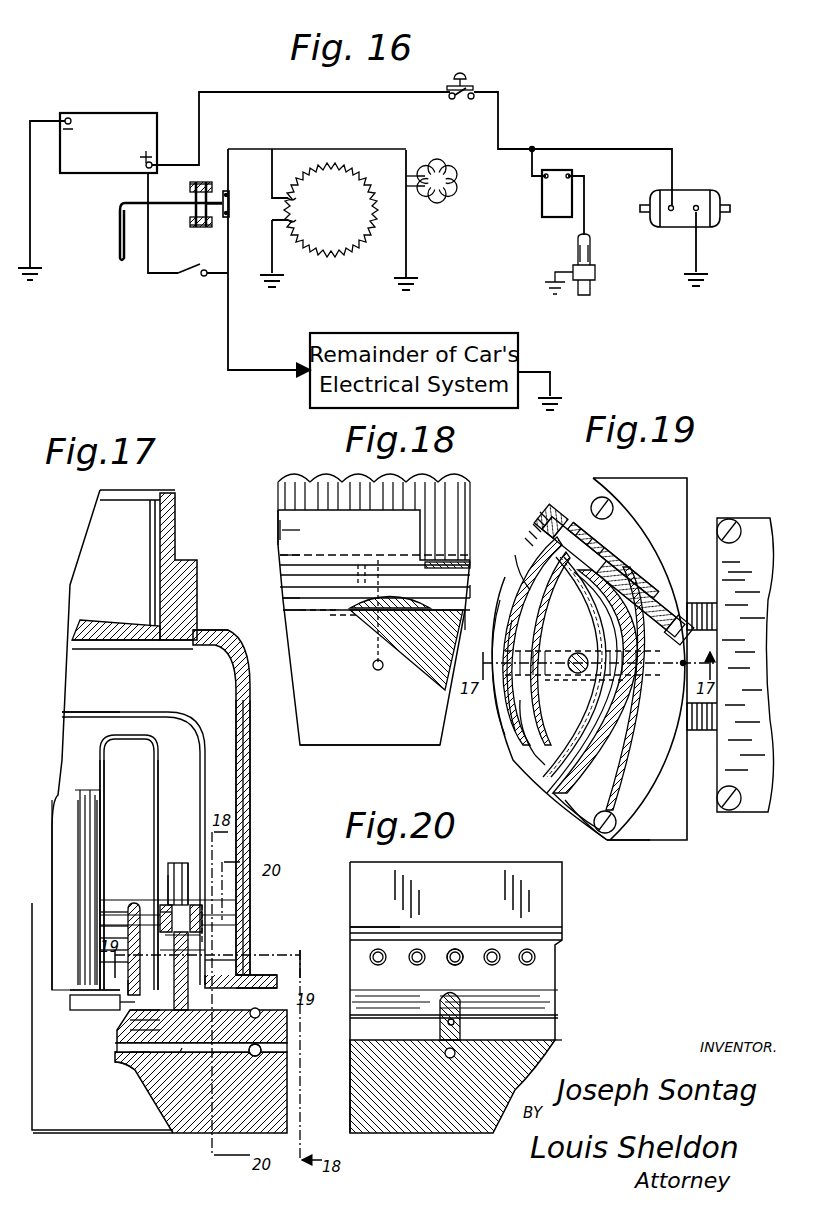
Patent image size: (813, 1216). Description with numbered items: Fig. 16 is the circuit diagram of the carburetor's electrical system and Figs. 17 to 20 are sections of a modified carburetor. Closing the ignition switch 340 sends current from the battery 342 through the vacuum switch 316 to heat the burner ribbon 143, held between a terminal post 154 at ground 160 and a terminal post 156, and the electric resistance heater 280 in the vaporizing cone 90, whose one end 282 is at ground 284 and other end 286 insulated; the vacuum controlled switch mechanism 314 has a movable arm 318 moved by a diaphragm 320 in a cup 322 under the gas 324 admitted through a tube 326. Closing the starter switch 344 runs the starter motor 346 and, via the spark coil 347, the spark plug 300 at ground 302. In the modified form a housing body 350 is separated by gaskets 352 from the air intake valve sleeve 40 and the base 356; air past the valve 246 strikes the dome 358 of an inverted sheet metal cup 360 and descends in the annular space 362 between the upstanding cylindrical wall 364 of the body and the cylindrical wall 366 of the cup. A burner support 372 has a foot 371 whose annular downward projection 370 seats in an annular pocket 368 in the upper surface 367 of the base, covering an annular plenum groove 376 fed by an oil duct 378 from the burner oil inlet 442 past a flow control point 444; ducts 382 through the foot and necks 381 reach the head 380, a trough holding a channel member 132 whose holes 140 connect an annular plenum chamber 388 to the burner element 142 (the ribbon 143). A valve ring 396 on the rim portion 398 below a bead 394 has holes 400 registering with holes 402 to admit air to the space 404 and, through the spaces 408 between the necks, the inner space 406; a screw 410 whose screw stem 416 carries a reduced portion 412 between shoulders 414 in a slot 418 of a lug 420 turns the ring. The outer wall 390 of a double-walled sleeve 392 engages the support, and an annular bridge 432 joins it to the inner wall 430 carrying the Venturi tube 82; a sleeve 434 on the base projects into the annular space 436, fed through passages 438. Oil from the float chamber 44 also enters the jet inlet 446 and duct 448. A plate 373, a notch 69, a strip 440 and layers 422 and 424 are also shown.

In FIG. 16, the battery 342 is at (125, 118).
In FIG. 16, the starter switch 344 is at (463, 98).
In FIG. 16, the vacuum controlled switch mechanism 314 is at (200, 228).
In FIG. 16, the gas 324 is at (191, 186).
In FIG. 16, the cup 322 is at (191, 222).
In FIG. 16, the diaphragm 320 is at (210, 200).
In FIG. 16, the vacuum switch 316 is at (232, 196).
In FIG. 16, the movable arm 318 is at (232, 206).
In FIG. 16, the tube 326 is at (120, 238).
In FIG. 16, the ignition switch 340 is at (193, 282).
In FIG. 16, the burner ribbon 143 is at (327, 258).
In FIG. 17, the burner ribbon 143 is at (190, 870).
In FIG. 18, the burner ribbon 143 is at (462, 492).
In FIG. 16, the terminal post 156 is at (308, 195).
In FIG. 16, the terminal post 154 is at (296, 222).
In FIG. 16, the ground 160 is at (278, 280).
In FIG. 16, the electric resistance heater 280 is at (462, 182).
In FIG. 16, the other end 286 is at (412, 175).
In FIG. 16, the one end 282 is at (412, 188).
In FIG. 16, the ground 284 is at (416, 284).
In FIG. 16, the ground 302 is at (384, 148).
In FIG. 16, the spark coil 347 is at (548, 220).
In FIG. 16, the spark plug 300 is at (592, 253).
In FIG. 16, the starter motor 346 is at (690, 190).
In FIG. 17, the air intake valve sleeve 40 is at (197, 592).
In FIG. 17, the valve 246 is at (104, 620).
In FIG. 17, the housing body 350 is at (252, 812).
In FIG. 19, the housing body 350 is at (618, 506).
In FIG. 17, the gaskets 352 is at (238, 637).
In FIG. 17, the annular space 362 is at (235, 772).
In FIG. 19, the annular space 362 is at (548, 766).
In FIG. 17, the upstanding cylindrical wall 364 is at (246, 780).
In FIG. 19, the upstanding cylindrical wall 364 is at (614, 760).
In FIG. 17, the cylindrical wall 366 is at (251, 792).
In FIG. 19, the cylindrical wall 366 is at (560, 790).
In FIG. 20, the cylindrical wall 366 is at (550, 898).
In FIG. 17, the inverted sheet metal cup 360 is at (145, 694).
In FIG. 17, the dome 358 is at (95, 700).
In FIG. 17, the annular bridge 432 is at (128, 738).
In FIG. 17, the inner wall 430 is at (104, 800).
In FIG. 17, the double-walled sleeve 392 is at (98, 768).
In FIG. 17, the Venturi tube 82 is at (60, 860).
In FIG. 17, the annular space 436 is at (125, 853).
In FIG. 17, the outer wall 390 is at (158, 850).
In FIG. 19, the outer wall 390 is at (536, 758).
In FIG. 17, the burner element 142 is at (184, 860).
In FIG. 18, the burner element 142 is at (305, 470).
In FIG. 17, the channel member 132 is at (166, 880).
In FIG. 18, the channel member 132 is at (280, 508).
In FIG. 17, the annular plenum chamber 388 is at (262, 906).
In FIG. 18, the annular plenum chamber 388 is at (470, 566).
In FIG. 19, the annular plenum chamber 388 is at (508, 566).
In FIG. 17, the inner space 406 is at (162, 908).
In FIG. 17, the holes 140 is at (158, 910).
In FIG. 17, the space 404 is at (205, 900).
In FIG. 17, the bead 394 is at (205, 915).
In FIG. 19, the bead 394 is at (522, 738).
In FIG. 20, the bead 394 is at (490, 930).
In FIG. 17, the valve ring 396 is at (205, 925).
In FIG. 19, the valve ring 396 is at (562, 805).
In FIG. 20, the valve ring 396 is at (560, 962).
In FIG. 17, the holes 400 is at (205, 938).
In FIG. 19, the holes 400 is at (586, 667).
In FIG. 20, the holes 400 is at (532, 966).
In FIG. 17, the holes 402 is at (205, 950).
In FIG. 19, the holes 402 is at (598, 605).
In FIG. 20, the holes 402 is at (452, 966).
In FIG. 17, the rim portion 398 is at (240, 968).
In FIG. 19, the rim portion 398 is at (588, 592).
In FIG. 20, the rim portion 398 is at (365, 920).
In FIG. 17, the upper surface 367 is at (280, 982).
In FIG. 18, the upper surface 367 is at (290, 598).
In FIG. 19, the upper surface 367 is at (658, 830).
In FIG. 20, the upper surface 367 is at (562, 985).
In FIG. 17, the sleeve 434 is at (128, 911).
In FIG. 19, the sleeve 434 is at (546, 700).
In FIG. 17, the head 380 is at (128, 925).
In FIG. 18, the head 380 is at (296, 532).
In FIG. 17, the ducts 382 is at (128, 937).
In FIG. 18, the ducts 382 is at (358, 600).
In FIG. 19, the ducts 382 is at (572, 691).
In FIG. 17, the necks 381 is at (128, 949).
In FIG. 18, the necks 381 is at (358, 568).
In FIG. 19, the necks 381 is at (579, 652).
In FIG. 17, the spaces 408 is at (128, 961).
In FIG. 18, the spaces 408 is at (298, 572).
In FIG. 19, the spaces 408 is at (536, 564).
In FIG. 17, the burner support 372 is at (93, 986).
In FIG. 18, the burner support 372 is at (276, 524).
In FIG. 17, the foot 371 is at (122, 987).
In FIG. 17, the vaporizing cone 90 is at (68, 1000).
In FIG. 17, the annular downward projection 370 is at (130, 1010).
In FIG. 18, the annular downward projection 370 is at (334, 612).
In FIG. 17, the annular pocket 368 is at (130, 1020).
In FIG. 18, the annular pocket 368 is at (284, 612).
In FIG. 17, the plate 373 is at (130, 1030).
In FIG. 17, the base 356 is at (190, 1136).
In FIG. 18, the base 356 is at (368, 748).
In FIG. 19, the base 356 is at (628, 835).
In FIG. 20, the base 356 is at (452, 1138).
In FIG. 17, the oil duct 378 is at (178, 1045).
In FIG. 18, the oil duct 378 is at (375, 636).
In FIG. 19, the oil duct 378 is at (618, 693).
In FIG. 20, the oil duct 378 is at (465, 1022).
In FIG. 17, the flow control point 444 is at (237, 1024).
In FIG. 17, the burner oil inlet 442 is at (265, 1039).
In FIG. 17, the duct 448 is at (256, 1056).
In FIG. 17, the jet inlet 446 is at (184, 1052).
In FIG. 18, the jet inlet 446 is at (378, 671).
In FIG. 19, the jet inlet 446 is at (668, 652).
In FIG. 20, the jet inlet 446 is at (454, 1058).
In FIG. 17, the passages 438 is at (150, 1056).
In FIG. 18, the passages 438 is at (486, 604).
In FIG. 19, the passages 438 is at (528, 598).
In FIG. 20, the passages 438 is at (560, 1025).
In FIG. 17, the notch 69 is at (120, 1066).
In FIG. 18, the annular plenum groove 376 is at (406, 650).
In FIG. 18, the strip 440 is at (447, 572).
In FIG. 19, the strip 440 is at (512, 692).
In FIG. 19, the screw 410 is at (645, 570).
In FIG. 19, the screw stem 416 is at (635, 565).
In FIG. 19, the shoulders 414 is at (568, 515).
In FIG. 19, the reduced portion 412 is at (576, 517).
In FIG. 19, the slot 418 is at (590, 522).
In FIG. 19, the layer 422 is at (546, 512).
In FIG. 19, the layer 424 is at (545, 518).
In FIG. 19, the lug 420 is at (541, 528).
In FIG. 19, the float chamber 44 is at (760, 520).